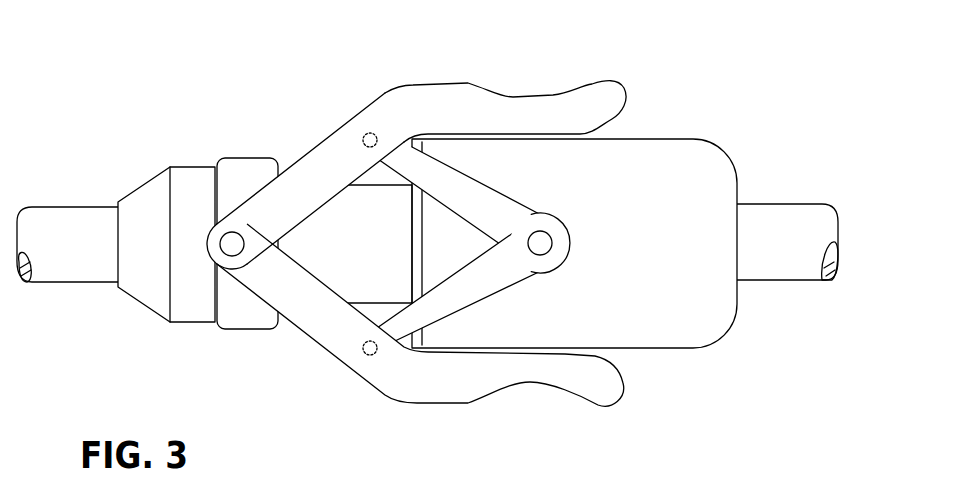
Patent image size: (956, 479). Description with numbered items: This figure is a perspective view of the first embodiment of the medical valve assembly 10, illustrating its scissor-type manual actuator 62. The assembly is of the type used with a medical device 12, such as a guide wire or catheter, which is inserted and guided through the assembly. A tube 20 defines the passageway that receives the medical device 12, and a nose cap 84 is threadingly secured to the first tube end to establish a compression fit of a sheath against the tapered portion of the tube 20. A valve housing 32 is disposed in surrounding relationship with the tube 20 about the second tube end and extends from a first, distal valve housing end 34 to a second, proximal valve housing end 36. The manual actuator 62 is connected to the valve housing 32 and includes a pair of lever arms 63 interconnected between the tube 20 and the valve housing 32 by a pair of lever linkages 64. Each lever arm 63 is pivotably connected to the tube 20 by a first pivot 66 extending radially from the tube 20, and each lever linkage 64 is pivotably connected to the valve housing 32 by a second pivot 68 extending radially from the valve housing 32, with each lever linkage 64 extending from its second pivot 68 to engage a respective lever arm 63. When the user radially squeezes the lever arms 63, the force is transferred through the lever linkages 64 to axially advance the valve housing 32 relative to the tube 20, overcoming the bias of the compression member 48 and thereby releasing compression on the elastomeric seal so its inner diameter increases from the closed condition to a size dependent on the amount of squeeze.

The medical valve assembly 10 is at (427, 231).
The medical device 12 is at (65, 270).
The tube 20 is at (355, 217).
The valve housing 32 is at (691, 137).
The first valve housing end 34 is at (410, 212).
The second valve housing end 36 is at (730, 153).
The compression member 48 is at (560, 190).
The manual actuator 62 is at (330, 362).
The lever arm 63 is at (272, 212).
The lever linkage 64 is at (473, 200).
The first pivot 66 is at (237, 253).
The second pivot 68 is at (546, 252).
The nose cap 84 is at (133, 192).